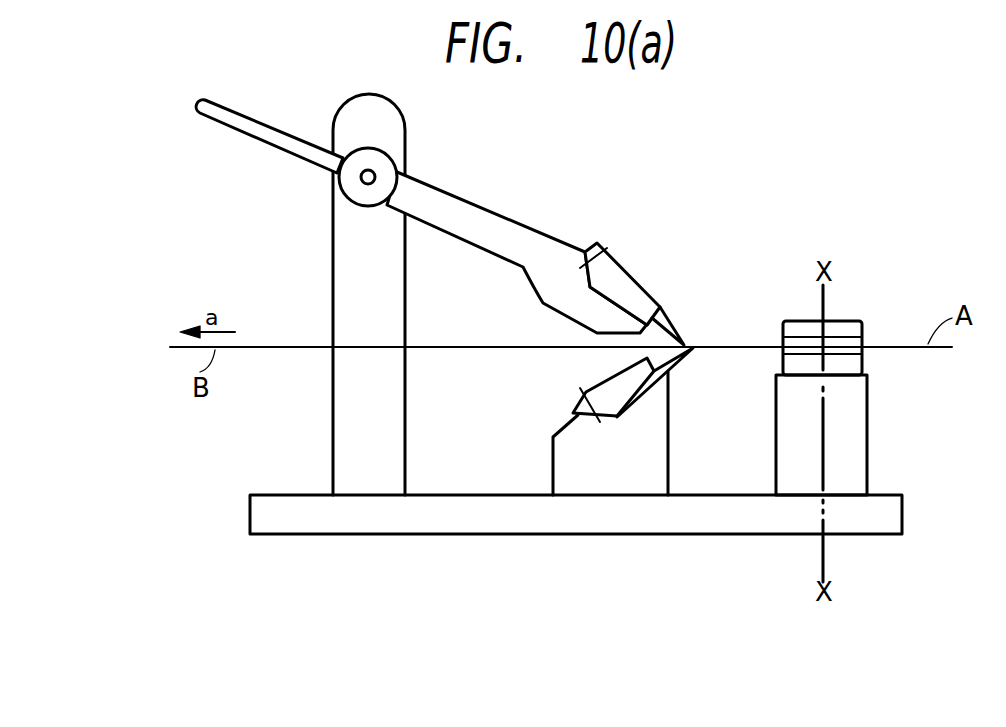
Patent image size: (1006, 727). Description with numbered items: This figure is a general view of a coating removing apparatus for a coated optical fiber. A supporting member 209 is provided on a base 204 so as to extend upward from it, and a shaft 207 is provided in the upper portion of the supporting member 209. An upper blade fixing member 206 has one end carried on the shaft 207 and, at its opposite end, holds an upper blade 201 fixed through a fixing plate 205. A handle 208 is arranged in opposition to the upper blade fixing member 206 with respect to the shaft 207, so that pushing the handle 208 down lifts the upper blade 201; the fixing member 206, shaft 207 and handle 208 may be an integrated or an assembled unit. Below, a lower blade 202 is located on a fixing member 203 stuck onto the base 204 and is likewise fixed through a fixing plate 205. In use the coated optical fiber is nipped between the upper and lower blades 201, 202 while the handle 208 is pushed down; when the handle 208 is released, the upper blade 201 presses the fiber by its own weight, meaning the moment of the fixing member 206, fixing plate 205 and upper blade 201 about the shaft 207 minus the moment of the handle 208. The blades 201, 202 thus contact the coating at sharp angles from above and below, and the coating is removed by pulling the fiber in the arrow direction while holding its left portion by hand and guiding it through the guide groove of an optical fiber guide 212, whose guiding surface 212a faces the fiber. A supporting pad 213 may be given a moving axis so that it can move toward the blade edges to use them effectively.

The upper blade 201 is at (668, 327).
The lower blade 202 is at (678, 367).
The fixing member 203 is at (563, 463).
The base 204 is at (522, 534).
The fixing plate 205 is at (627, 280).
The upper blade fixing member 206 is at (545, 245).
The shaft 207 is at (375, 175).
The handle 208 is at (295, 146).
The supporting member 209 is at (342, 388).
The optical fiber guide 212 is at (840, 322).
The workpiece surface 212a is at (848, 353).
The supporting pad 213 is at (860, 428).